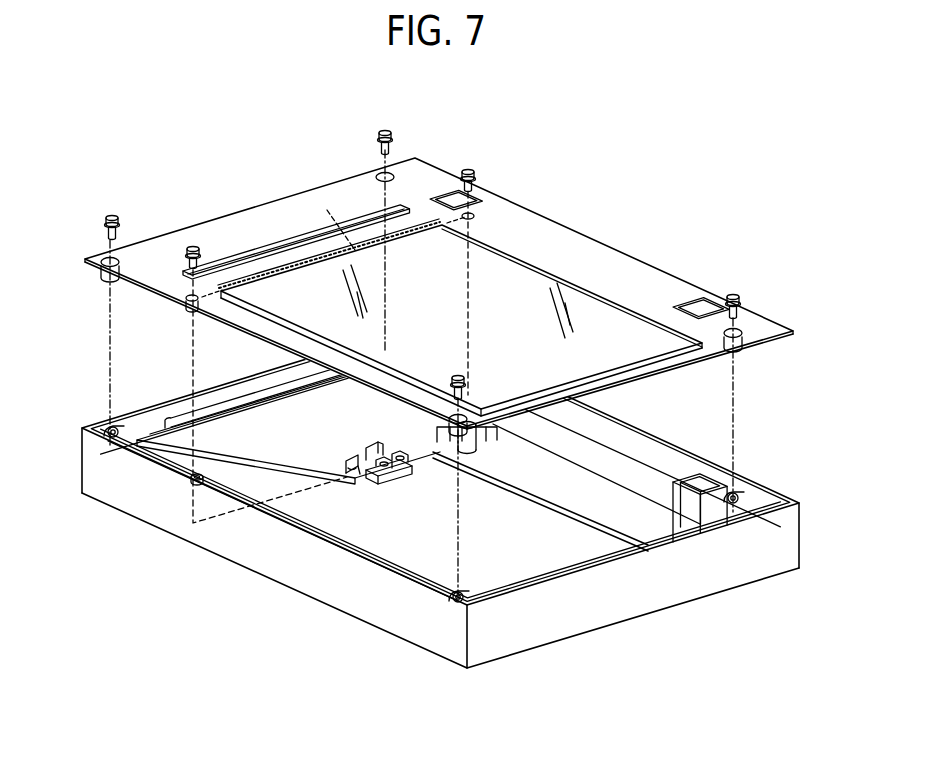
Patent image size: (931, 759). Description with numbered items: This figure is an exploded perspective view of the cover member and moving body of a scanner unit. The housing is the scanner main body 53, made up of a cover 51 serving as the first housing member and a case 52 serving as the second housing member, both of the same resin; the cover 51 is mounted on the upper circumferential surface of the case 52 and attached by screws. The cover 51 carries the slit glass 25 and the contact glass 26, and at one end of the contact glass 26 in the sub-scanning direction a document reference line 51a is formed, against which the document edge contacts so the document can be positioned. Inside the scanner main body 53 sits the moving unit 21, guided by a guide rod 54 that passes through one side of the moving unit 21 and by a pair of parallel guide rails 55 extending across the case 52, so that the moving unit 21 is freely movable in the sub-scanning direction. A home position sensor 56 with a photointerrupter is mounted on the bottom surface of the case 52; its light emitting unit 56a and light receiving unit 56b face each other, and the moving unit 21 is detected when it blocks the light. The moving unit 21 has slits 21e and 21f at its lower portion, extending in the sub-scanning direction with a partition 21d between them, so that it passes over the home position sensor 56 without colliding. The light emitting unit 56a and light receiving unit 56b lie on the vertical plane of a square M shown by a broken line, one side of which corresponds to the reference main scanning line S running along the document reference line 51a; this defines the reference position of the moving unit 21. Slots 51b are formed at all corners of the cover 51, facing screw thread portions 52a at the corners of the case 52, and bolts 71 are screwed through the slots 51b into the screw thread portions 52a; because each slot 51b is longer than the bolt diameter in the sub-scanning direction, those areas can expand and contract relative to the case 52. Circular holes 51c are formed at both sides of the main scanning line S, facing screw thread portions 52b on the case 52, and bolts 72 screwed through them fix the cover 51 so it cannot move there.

The moving unit 21 is at (172, 445).
The partition 21d is at (360, 480).
The slit 21e is at (345, 468).
The slit 21f is at (372, 444).
The slit glass 25 is at (242, 262).
The contact glass 26 is at (608, 318).
The cover 51 is at (568, 240).
The document reference line 51a is at (332, 272).
The slot 51b is at (118, 262).
The circular hole 51c is at (185, 298).
The case 52 is at (594, 608).
The screw thread portion 52a is at (112, 430).
The screw thread portion 52b is at (205, 478).
The scanner main body 53 is at (727, 206).
The guide rod 54 is at (405, 584).
The guide rail 55 is at (578, 518).
The home position sensor 56 is at (406, 503).
The light emitting unit 56a is at (378, 482).
The light receiving unit 56b is at (398, 478).
The bolt 71 is at (114, 216).
The bolt 72 is at (194, 246).
The reference main scanning line S is at (337, 219).
The square M is at (190, 368).